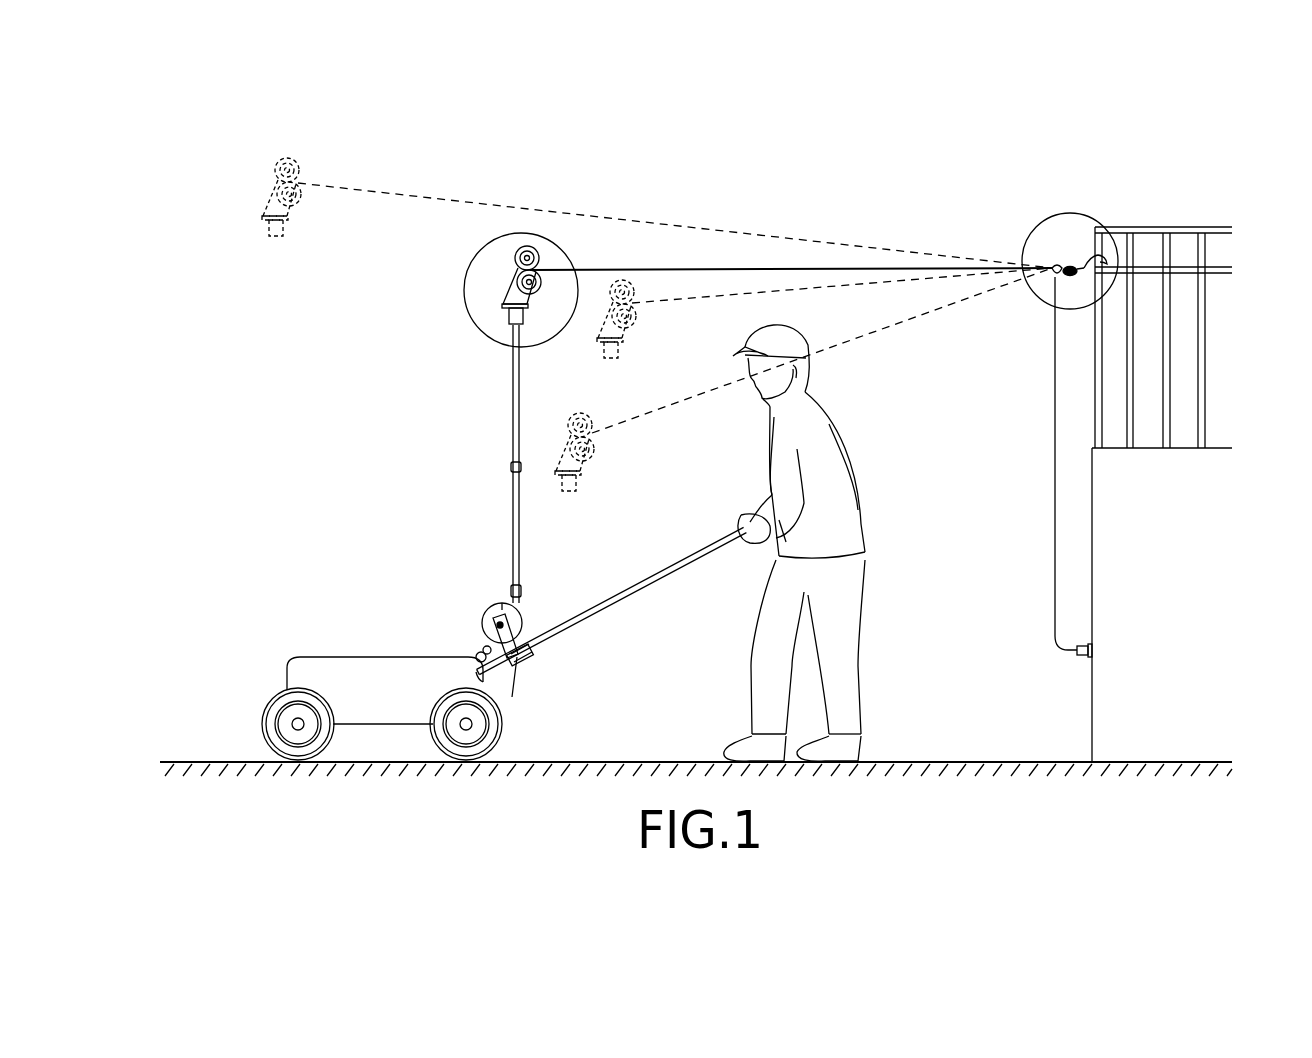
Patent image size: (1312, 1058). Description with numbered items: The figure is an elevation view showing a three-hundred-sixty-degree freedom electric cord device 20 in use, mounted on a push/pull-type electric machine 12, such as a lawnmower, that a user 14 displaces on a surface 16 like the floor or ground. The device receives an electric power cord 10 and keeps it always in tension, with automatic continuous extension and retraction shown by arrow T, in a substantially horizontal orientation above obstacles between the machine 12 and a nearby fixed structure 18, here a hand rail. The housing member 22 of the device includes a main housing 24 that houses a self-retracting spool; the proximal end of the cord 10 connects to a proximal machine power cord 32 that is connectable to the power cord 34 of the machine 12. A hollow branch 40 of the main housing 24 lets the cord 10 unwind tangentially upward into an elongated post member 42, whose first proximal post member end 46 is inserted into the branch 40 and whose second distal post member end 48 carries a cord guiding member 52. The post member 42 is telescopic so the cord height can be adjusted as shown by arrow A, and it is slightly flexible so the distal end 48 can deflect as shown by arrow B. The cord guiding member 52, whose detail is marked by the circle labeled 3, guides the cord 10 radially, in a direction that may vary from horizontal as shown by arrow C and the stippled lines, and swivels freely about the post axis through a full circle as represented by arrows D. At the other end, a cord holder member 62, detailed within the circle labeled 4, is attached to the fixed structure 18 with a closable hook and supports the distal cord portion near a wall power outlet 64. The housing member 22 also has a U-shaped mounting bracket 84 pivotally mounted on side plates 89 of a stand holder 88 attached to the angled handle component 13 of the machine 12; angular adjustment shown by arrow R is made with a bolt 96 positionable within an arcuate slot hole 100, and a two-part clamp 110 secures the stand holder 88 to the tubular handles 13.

The electric power cord 10 is at (728, 385).
The push/pull-type electric machine 12 is at (316, 657).
The angled component 13 is at (690, 566).
The user 14 is at (862, 588).
The surface 16 is at (1013, 762).
The fixed structure 18 is at (1094, 400).
The 360-degree freedom electric cord device 20 is at (417, 517).
The housing member 22 is at (525, 623).
The main housing 24 is at (480, 619).
The proximal machine power cord 32 is at (485, 647).
The power cord of the electric machine 34 is at (478, 655).
The hollow branch 40 is at (522, 612).
The elongated post member 42 is at (506, 472).
The first proximal post member end 46 is at (522, 576).
The second distal post member end 48 is at (512, 332).
The cord guiding member 52 is at (312, 213).
The cord holder member 62 is at (1044, 291).
The wall power outlet 64 is at (1090, 660).
The mounting bracket 84 is at (481, 676).
The stand holder 88 is at (544, 655).
The side plates 89 is at (477, 616).
The bolt 96 is at (513, 692).
The arcuate slot hole 100 is at (539, 648).
The two-part clamp 110 is at (521, 663).
The detail circle FIG. 3 is at (518, 288).
The detail circle FIG. 4 is at (1065, 255).
The arrow A is at (528, 455).
The arrow B is at (497, 375).
The arrow C is at (947, 292).
The arrows D is at (508, 296).
The arrow R is at (500, 574).
The arrow T is at (602, 260).